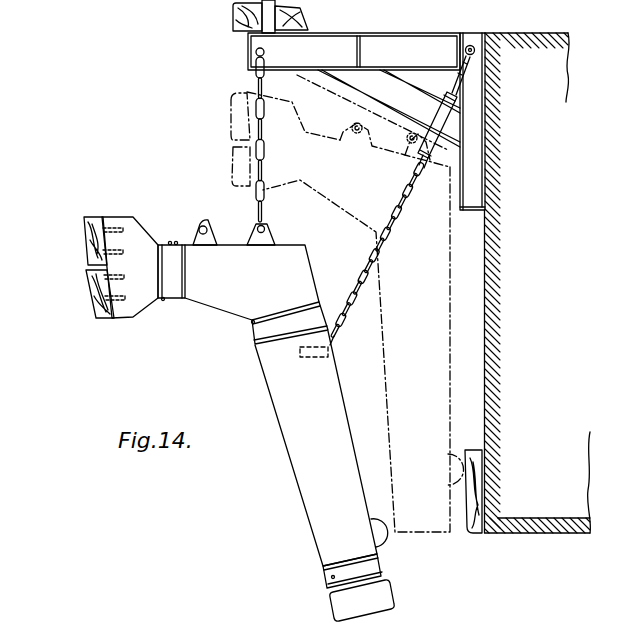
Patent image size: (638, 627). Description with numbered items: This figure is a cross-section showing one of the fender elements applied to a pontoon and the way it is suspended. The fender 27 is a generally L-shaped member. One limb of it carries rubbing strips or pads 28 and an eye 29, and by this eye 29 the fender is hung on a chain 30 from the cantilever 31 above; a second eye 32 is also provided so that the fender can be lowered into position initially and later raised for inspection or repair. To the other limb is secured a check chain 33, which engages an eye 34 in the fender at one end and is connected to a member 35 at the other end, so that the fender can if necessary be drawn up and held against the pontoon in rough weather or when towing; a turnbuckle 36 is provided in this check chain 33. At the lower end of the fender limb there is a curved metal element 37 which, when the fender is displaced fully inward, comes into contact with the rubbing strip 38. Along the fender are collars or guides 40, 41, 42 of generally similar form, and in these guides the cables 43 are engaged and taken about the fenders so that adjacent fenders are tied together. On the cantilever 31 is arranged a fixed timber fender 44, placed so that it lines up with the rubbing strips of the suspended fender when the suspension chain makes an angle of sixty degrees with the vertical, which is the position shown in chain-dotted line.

The fender 27 is at (284, 392).
The rubbing strips or pads 28 is at (93, 277).
The eye 29 is at (265, 228).
The chain 30 is at (266, 148).
The cantilever 31 is at (312, 41).
The second eye 32 is at (198, 226).
The check chain 33 is at (379, 257).
The eye 34 is at (329, 346).
The member 35 is at (474, 51).
The turnbuckle 36 is at (443, 120).
The curved metal element 37 is at (379, 527).
The rubbing strip 38 is at (475, 478).
The collar or guide 40 is at (180, 264).
The collar or guide 41 is at (288, 326).
The collar or guide 42 is at (358, 569).
The cables 43 is at (254, 330).
The fixed timber fender 44 is at (233, 25).